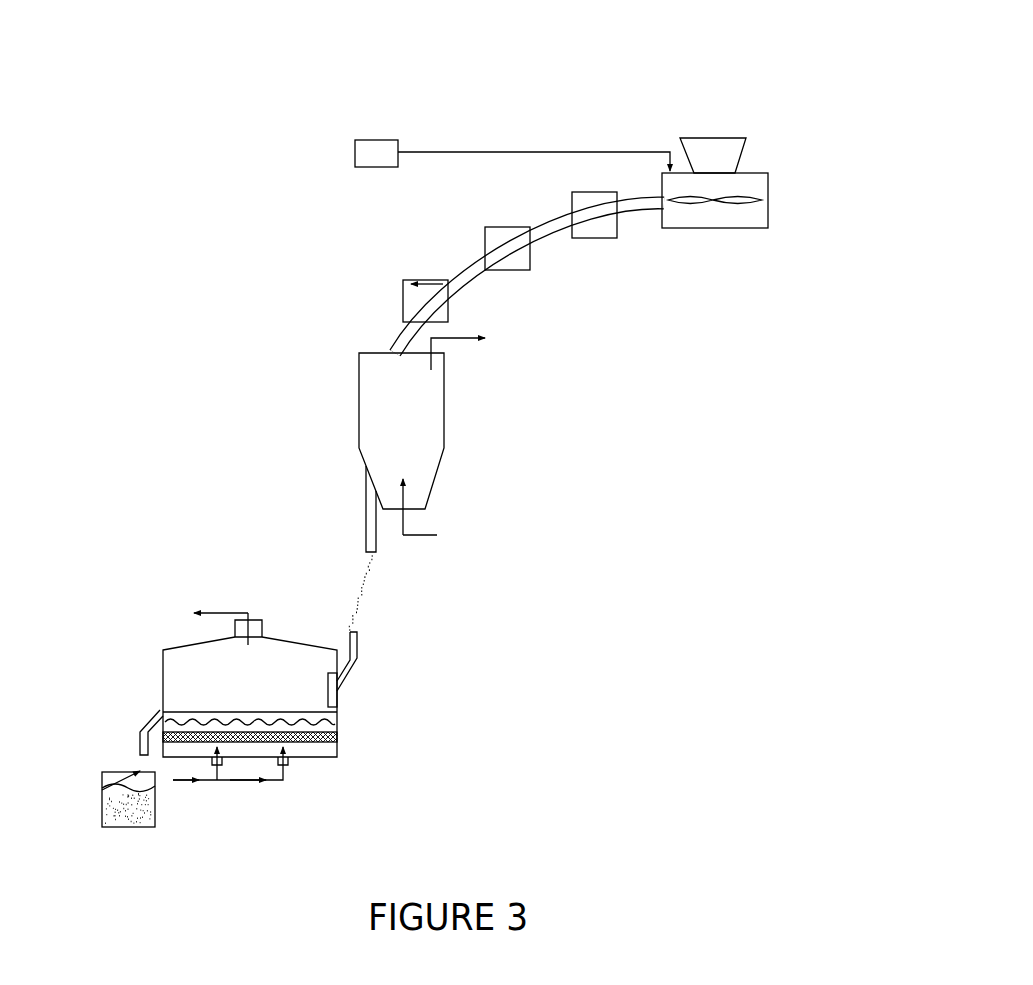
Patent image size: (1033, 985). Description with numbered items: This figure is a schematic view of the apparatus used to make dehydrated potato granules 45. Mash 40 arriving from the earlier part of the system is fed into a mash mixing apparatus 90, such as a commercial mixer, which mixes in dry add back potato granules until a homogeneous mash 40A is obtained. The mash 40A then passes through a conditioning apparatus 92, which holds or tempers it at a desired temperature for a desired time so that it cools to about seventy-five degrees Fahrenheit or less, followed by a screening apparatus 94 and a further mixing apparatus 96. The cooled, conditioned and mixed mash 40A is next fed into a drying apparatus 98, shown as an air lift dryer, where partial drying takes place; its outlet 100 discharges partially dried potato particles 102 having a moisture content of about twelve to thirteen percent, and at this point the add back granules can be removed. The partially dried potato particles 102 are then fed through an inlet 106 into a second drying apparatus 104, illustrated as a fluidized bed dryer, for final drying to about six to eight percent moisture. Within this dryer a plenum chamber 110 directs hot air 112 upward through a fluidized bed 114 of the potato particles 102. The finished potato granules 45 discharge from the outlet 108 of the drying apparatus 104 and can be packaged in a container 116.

The mash 40 is at (713, 126).
The homogeneous mash 40A is at (637, 208).
The dehydrated potato granules 45 is at (108, 800).
The mash mixing apparatus 90 is at (706, 218).
The conditioning apparatus 92 is at (585, 233).
The screening apparatus 94 is at (507, 263).
The mixing apparatus 96 is at (408, 298).
The drying apparatus 98 is at (444, 425).
The outlet 100 is at (366, 512).
The partially dried potato particles 102 is at (358, 595).
The drying apparatus 104 is at (163, 668).
The inlet 106 is at (355, 670).
The outlet 108 is at (143, 718).
The plenum chamber 110 is at (212, 716).
The hot air 112 is at (228, 613).
The fluidized bed 114 is at (320, 750).
The container 116 is at (103, 815).